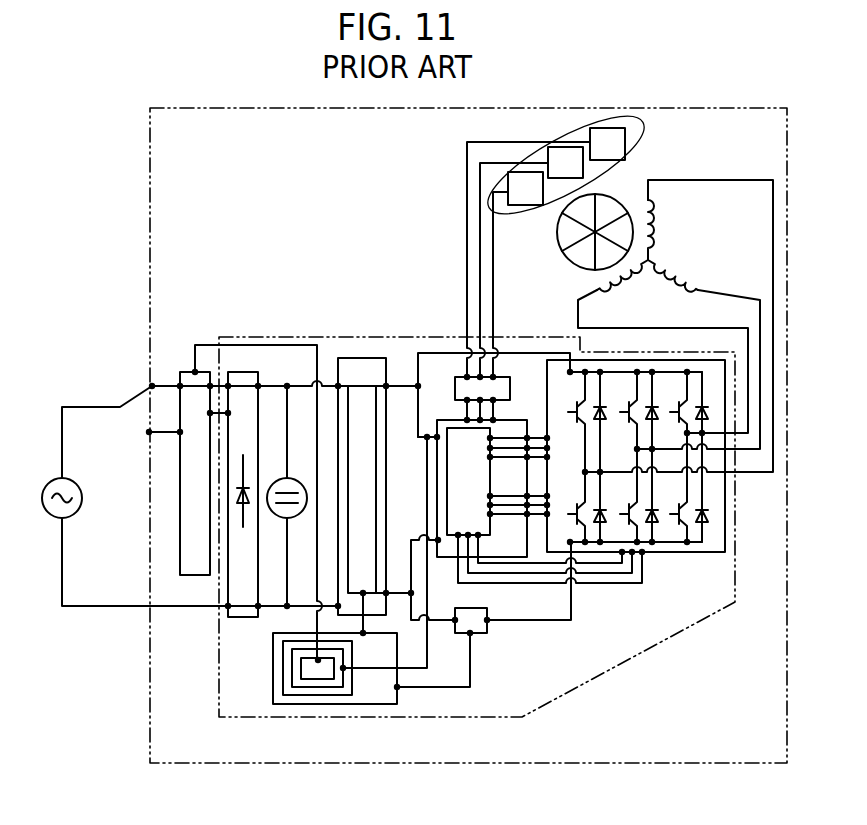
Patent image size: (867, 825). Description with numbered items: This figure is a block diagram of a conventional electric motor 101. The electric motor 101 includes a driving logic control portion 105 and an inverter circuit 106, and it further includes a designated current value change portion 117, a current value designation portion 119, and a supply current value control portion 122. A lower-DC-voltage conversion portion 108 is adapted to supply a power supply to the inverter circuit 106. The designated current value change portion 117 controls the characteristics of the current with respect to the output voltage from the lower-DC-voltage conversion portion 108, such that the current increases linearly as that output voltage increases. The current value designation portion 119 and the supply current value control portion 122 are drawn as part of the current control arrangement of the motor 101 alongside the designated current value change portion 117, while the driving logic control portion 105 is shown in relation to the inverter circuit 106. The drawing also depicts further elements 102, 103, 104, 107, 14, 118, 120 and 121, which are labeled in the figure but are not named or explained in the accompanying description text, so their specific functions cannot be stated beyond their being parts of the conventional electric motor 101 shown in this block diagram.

The electric motor 101 is at (150, 140).
The stator windings (U, V, W phase) 102 is at (625, 283).
The rotor with permanent magnets 103 is at (580, 267).
The Hall sensors (U, V, W) 104 is at (525, 210).
The driving logic control portion 105 is at (528, 540).
The inverter circuit 106 is at (674, 552).
The control circuit (microcomputer) 107 is at (483, 538).
The lower-DC-voltage conversion portion 108 is at (345, 357).
The voltage regulator 14 is at (357, 386).
The designated current value change portion 117 is at (292, 667).
The smoothing capacitor 118 is at (285, 477).
The current value designation portion 119 is at (345, 695).
The amplifier circuit 120 is at (315, 680).
The overcurrent detection circuit 121 is at (487, 633).
The supply current value control portion 122 is at (397, 704).